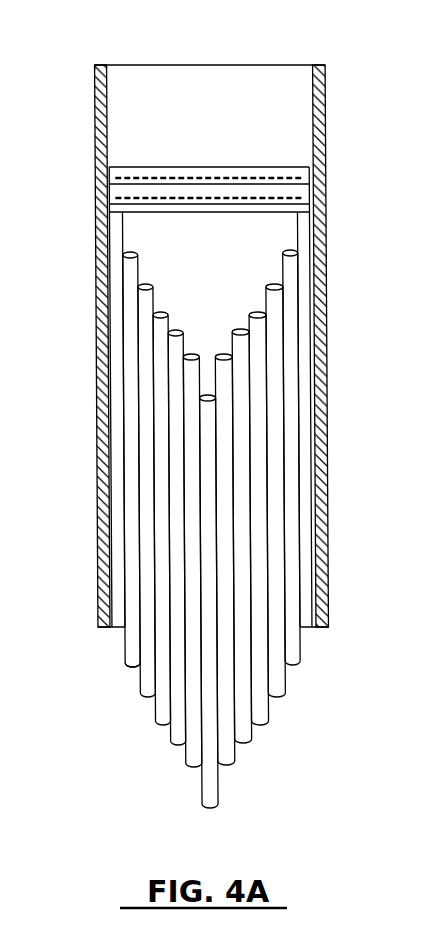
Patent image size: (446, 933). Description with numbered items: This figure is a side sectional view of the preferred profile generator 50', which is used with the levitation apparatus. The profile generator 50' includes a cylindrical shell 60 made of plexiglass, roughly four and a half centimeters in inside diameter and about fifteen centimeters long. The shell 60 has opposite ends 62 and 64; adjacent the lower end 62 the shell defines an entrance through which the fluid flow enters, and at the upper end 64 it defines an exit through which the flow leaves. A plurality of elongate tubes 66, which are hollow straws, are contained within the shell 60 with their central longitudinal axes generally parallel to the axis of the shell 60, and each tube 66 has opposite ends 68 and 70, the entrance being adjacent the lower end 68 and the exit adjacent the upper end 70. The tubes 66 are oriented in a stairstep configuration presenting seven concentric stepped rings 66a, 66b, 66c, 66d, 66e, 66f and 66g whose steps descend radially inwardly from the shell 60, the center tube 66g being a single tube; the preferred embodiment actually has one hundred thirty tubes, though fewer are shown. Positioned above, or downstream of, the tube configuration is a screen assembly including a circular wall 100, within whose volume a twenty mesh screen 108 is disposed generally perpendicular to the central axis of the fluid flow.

The profile generator 50' is at (251, 57).
The cylindrical shell 60 is at (321, 595).
The shell end 62 is at (104, 628).
The shell end 64 is at (107, 65).
The elongate tubes 66 is at (130, 313).
The first ring of tubes 66a is at (310, 228).
The second ring of tubes 66b is at (293, 290).
The third ring of tubes 66c is at (280, 330).
The fourth ring of tubes 66d is at (262, 386).
The fifth ring of tubes 66e is at (243, 420).
The sixth ring of tubes 66f is at (224, 457).
The center tube 66g is at (208, 507).
The tube end 68 is at (133, 668).
The tube end 70 is at (128, 253).
The circular wall 100 is at (126, 184).
The screen 108 is at (250, 133).